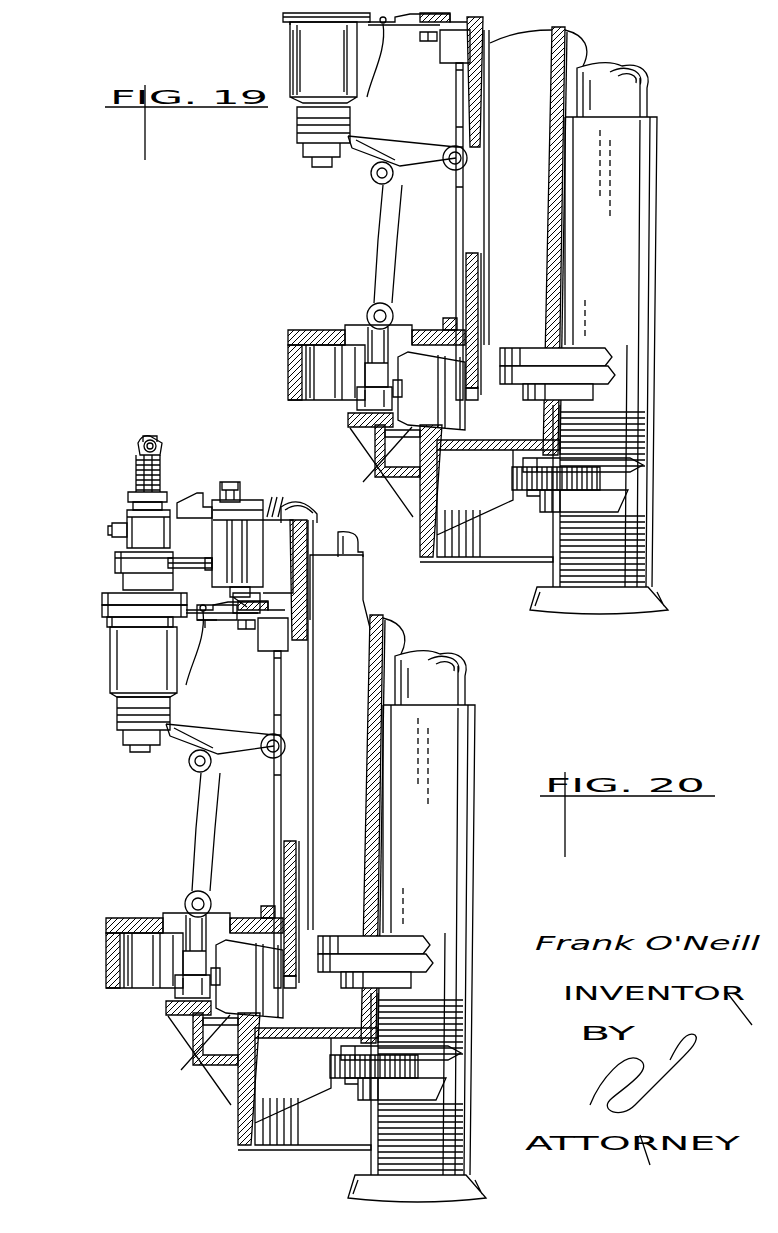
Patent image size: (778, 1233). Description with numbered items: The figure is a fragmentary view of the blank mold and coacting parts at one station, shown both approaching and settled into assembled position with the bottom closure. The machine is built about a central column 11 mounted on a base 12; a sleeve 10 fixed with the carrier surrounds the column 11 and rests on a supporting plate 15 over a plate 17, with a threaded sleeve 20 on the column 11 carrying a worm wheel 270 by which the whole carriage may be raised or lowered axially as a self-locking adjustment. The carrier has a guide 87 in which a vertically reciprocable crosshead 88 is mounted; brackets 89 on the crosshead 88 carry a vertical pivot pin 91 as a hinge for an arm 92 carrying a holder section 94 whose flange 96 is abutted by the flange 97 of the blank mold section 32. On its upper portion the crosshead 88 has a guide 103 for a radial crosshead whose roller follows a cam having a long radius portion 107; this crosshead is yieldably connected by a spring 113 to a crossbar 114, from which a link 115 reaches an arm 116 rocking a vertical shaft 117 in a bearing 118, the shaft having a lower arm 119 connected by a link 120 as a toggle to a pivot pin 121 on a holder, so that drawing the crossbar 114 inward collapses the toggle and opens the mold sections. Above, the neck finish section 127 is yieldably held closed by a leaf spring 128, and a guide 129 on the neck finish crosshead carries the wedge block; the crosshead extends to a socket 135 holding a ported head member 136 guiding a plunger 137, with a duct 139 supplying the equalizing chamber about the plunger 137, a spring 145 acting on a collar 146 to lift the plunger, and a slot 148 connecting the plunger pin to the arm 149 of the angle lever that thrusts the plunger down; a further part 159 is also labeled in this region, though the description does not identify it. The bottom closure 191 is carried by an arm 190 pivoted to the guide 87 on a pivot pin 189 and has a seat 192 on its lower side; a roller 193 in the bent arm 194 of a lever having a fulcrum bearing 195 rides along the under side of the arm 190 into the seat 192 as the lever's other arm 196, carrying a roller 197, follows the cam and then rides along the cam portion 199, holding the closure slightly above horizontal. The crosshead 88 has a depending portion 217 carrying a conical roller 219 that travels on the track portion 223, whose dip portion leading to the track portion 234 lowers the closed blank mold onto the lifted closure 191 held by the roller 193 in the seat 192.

In FIG. 19, the sleeve 10 is at (582, 58).
In FIG. 20, the sleeve 10 is at (413, 829).
In FIG. 19, the column 11 is at (648, 250).
In FIG. 20, the column 11 is at (441, 940).
In FIG. 19, the base 12 is at (535, 594).
In FIG. 20, the base 12 is at (402, 1181).
In FIG. 19, the supporting plate 15 is at (612, 355).
In FIG. 20, the supporting plate 15 is at (378, 928).
In FIG. 19, the plate 17 is at (615, 376).
In FIG. 20, the plate 17 is at (415, 958).
In FIG. 19, the threaded sleeve 20 is at (556, 514).
In FIG. 20, the threaded sleeve 20 is at (385, 1109).
In FIG. 19, the blank mold section 32 is at (292, 52).
In FIG. 20, the blank mold section 32 is at (110, 655).
In FIG. 19, the guide 87 is at (456, 100).
In FIG. 20, the guide 87 is at (261, 819).
In FIG. 19, the crosshead 88 is at (484, 82).
In FIG. 20, the crosshead 88 is at (313, 605).
In FIG. 19, the bracket 89 is at (416, 27).
In FIG. 20, the bracket 89 is at (235, 658).
In FIG. 19, the pivot pin 91 is at (422, 45).
In FIG. 20, the pivot pin 91 is at (257, 637).
In FIG. 19, the arm 92 is at (368, 42).
In FIG. 20, the arm 92 is at (206, 628).
In FIG. 19, the holder section 94 is at (285, 18).
In FIG. 20, the holder section 94 is at (107, 620).
In FIG. 20, the flange 96 is at (102, 608).
In FIG. 20, the flange 97 is at (104, 597).
In FIG. 20, the guide 103 is at (318, 517).
In FIG. 20, the long radius portion 107 is at (358, 545).
In FIG. 20, the spring 113 is at (284, 510).
In FIG. 20, the crossbar 114 is at (273, 510).
In FIG. 20, the link 115 is at (232, 484).
In FIG. 20, the arm 116 is at (247, 533).
In FIG. 20, the vertical shaft 117 is at (246, 600).
In FIG. 20, the bearing 118 is at (214, 545).
In FIG. 20, the arm 119 is at (210, 568).
In FIG. 20, the link 120 is at (230, 625).
In FIG. 19, the pivot pin 121 is at (370, 80).
In FIG. 20, the pivot pin 121 is at (206, 615).
In FIG. 20, the neck finish section 127 is at (115, 560).
In FIG. 20, the leaf spring 128 is at (185, 568).
In FIG. 20, the guide 129 is at (185, 503).
In FIG. 20, the socket 135 is at (127, 523).
In FIG. 20, the ported head member 136 is at (130, 508).
In FIG. 20, the plunger 137 is at (128, 497).
In FIG. 20, the duct 139 is at (108, 531).
In FIG. 20, the spring 145 is at (136, 467).
In FIG. 20, the collar 146 is at (161, 470).
In FIG. 20, the slot 148 is at (152, 440).
In FIG. 20, the arm 149 is at (162, 448).
In FIG. 20, the screw 159 is at (240, 494).
In FIG. 19, the pivot pin 189 is at (448, 170).
In FIG. 20, the pivot pin 189 is at (256, 728).
In FIG. 19, the arm 190 is at (398, 144).
In FIG. 20, the arm 190 is at (220, 747).
In FIG. 19, the bottom closure 191 is at (298, 120).
In FIG. 20, the bottom closure 191 is at (117, 710).
In FIG. 19, the seat 192 is at (372, 178).
In FIG. 20, the seat 192 is at (175, 764).
In FIG. 19, the roller 193 is at (380, 210).
In FIG. 20, the roller 193 is at (179, 800).
In FIG. 19, the bent arm 194 is at (377, 246).
In FIG. 20, the bent arm 194 is at (179, 852).
In FIG. 19, the fulcrum bearing 195 is at (367, 312).
In FIG. 20, the fulcrum bearing 195 is at (165, 897).
In FIG. 19, the arm 196 is at (362, 372).
In FIG. 20, the arm 196 is at (157, 960).
In FIG. 19, the roller 197 is at (358, 400).
In FIG. 20, the roller 197 is at (157, 1000).
In FIG. 19, the cam portion 199 is at (372, 420).
In FIG. 20, the cam portion 199 is at (194, 974).
In FIG. 19, the depending portion 217 is at (481, 318).
In FIG. 20, the depending portion 217 is at (313, 914).
In FIG. 19, the conical roller 219 is at (410, 445).
In FIG. 20, the conical roller 219 is at (211, 1042).
In FIG. 19, the track portion 223 is at (452, 450).
In FIG. 20, the track portion 234 is at (308, 1089).
In FIG. 19, the worm wheel 270 is at (540, 492).
In FIG. 20, the worm wheel 270 is at (382, 1082).